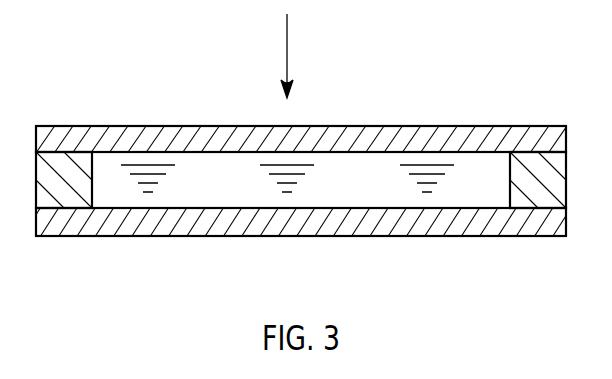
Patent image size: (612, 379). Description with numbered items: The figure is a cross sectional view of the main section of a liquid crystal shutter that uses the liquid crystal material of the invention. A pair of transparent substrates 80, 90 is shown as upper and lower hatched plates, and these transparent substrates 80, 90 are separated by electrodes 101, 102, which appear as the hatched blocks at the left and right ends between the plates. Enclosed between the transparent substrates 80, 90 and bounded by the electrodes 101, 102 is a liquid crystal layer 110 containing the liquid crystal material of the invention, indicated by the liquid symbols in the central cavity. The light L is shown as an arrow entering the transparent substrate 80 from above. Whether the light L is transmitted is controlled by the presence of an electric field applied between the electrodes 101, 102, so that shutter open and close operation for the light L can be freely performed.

The transparent substrate 80 is at (427, 142).
The transparent substrate 90 is at (149, 222).
The electrode 101 is at (65, 167).
The electrode 102 is at (540, 167).
The liquid crystal layer 110 is at (373, 195).
The light L is at (290, 52).